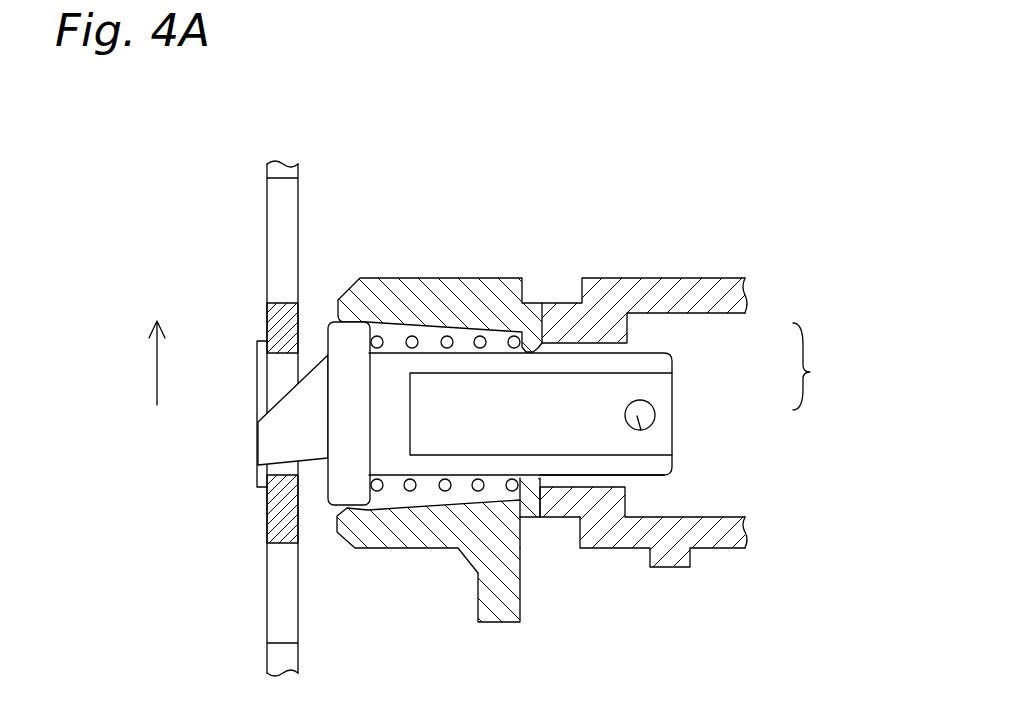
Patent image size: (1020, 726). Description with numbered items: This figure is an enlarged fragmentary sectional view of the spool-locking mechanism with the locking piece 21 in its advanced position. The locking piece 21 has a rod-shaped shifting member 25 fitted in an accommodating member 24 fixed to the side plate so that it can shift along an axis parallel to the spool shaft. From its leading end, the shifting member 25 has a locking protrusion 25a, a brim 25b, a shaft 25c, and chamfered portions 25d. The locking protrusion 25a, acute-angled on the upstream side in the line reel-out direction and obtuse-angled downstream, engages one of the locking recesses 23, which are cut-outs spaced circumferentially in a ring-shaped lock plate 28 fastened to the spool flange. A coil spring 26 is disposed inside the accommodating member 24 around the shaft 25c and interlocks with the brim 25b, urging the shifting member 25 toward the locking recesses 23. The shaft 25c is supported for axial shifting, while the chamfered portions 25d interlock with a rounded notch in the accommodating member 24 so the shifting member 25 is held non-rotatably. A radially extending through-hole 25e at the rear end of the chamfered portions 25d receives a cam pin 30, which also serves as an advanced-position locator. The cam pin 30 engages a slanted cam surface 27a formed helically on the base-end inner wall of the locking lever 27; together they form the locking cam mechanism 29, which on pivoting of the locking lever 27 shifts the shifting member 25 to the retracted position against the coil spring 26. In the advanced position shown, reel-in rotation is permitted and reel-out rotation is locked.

The locking piece 21 is at (428, 329).
The locking recesses 23 is at (283, 543).
The accommodating member 24 is at (440, 532).
The shifting member 25 is at (492, 362).
The locking protrusion 25a is at (298, 408).
The brim 25b is at (349, 488).
The shaft 25c is at (628, 468).
The chamfered portions 25d is at (578, 398).
The through-hole 25e is at (637, 416).
The coil spring 26 is at (482, 492).
The locking lever 27 is at (680, 553).
The slanted cam surface 27a is at (630, 327).
The lock plate 28 is at (285, 511).
The locking cam mechanism 29 is at (821, 366).
The cam pin 30 is at (645, 410).